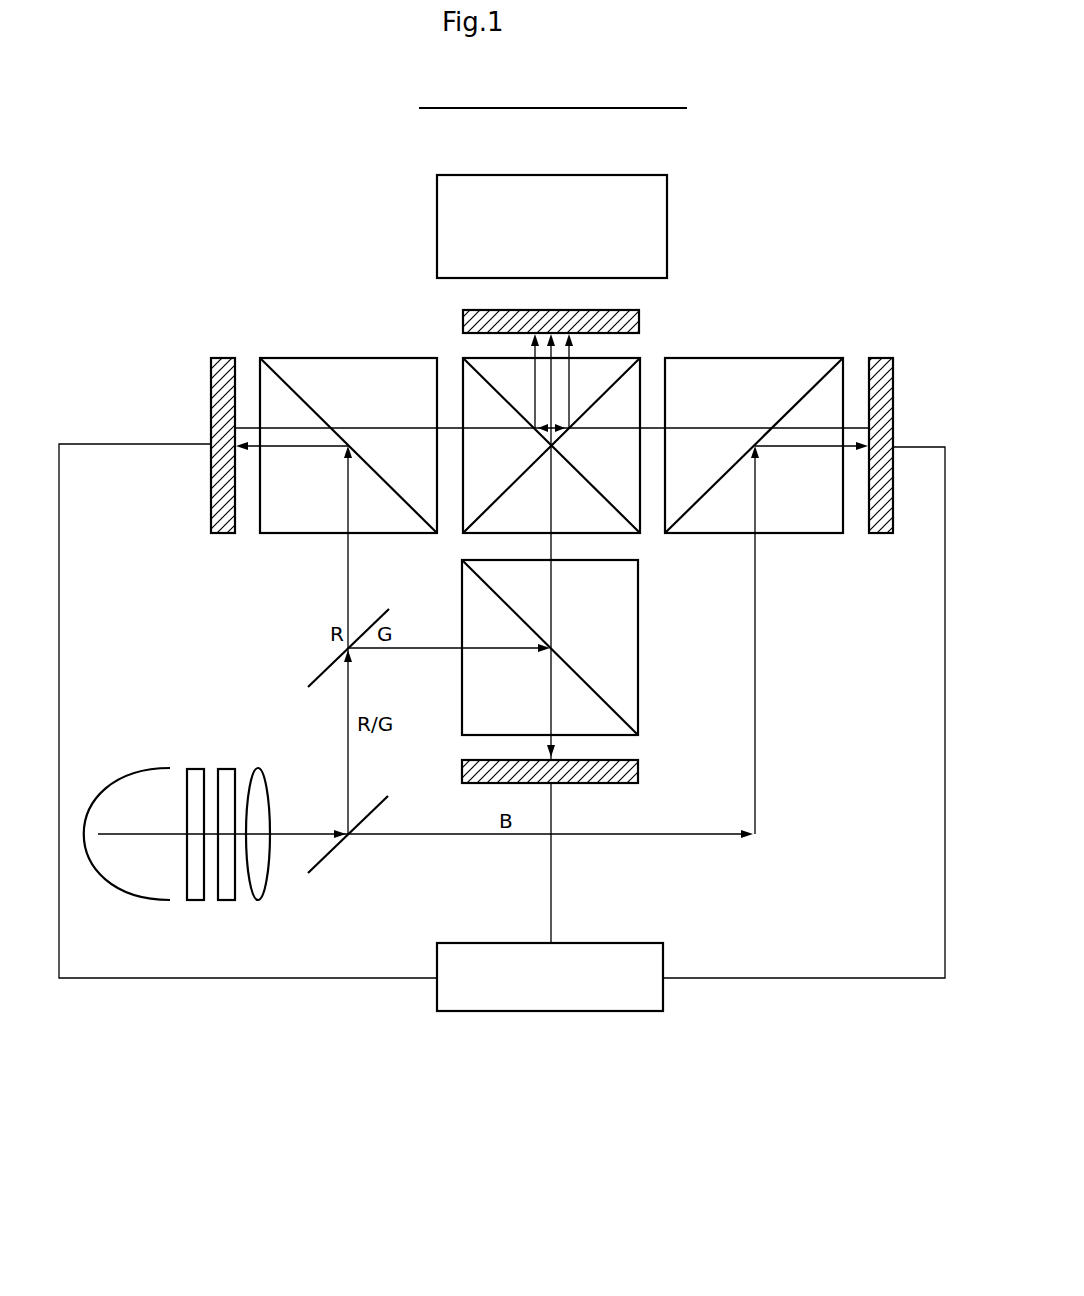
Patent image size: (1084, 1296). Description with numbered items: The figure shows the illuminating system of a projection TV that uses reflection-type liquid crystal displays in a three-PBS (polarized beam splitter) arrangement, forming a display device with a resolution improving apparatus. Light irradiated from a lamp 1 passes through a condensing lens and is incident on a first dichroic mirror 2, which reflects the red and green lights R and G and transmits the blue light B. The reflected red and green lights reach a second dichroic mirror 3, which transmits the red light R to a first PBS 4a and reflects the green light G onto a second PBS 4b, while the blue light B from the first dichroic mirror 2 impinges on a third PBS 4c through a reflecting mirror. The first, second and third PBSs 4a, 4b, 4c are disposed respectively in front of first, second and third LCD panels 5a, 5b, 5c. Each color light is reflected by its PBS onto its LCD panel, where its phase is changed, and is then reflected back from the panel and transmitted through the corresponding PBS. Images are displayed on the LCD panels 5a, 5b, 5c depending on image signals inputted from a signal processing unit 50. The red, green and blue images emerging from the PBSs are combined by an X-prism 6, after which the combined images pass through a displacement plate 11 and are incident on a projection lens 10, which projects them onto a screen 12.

The lamp 1 is at (148, 768).
The first dichroic mirror 2 is at (330, 858).
The second dichroic mirror 3 is at (327, 665).
The first PBS 4a is at (349, 365).
The second PBS 4b is at (632, 643).
The third PBS 4c is at (800, 527).
The first LCD panel 5a is at (222, 355).
The second LCD panel 5b is at (640, 770).
The third LCD panel 5c is at (880, 535).
The X-prism 6 is at (500, 370).
The projection lens 10 is at (667, 228).
The displacement plate 11 is at (640, 318).
The screen 12 is at (627, 108).
The signal processing unit 50 is at (550, 1013).